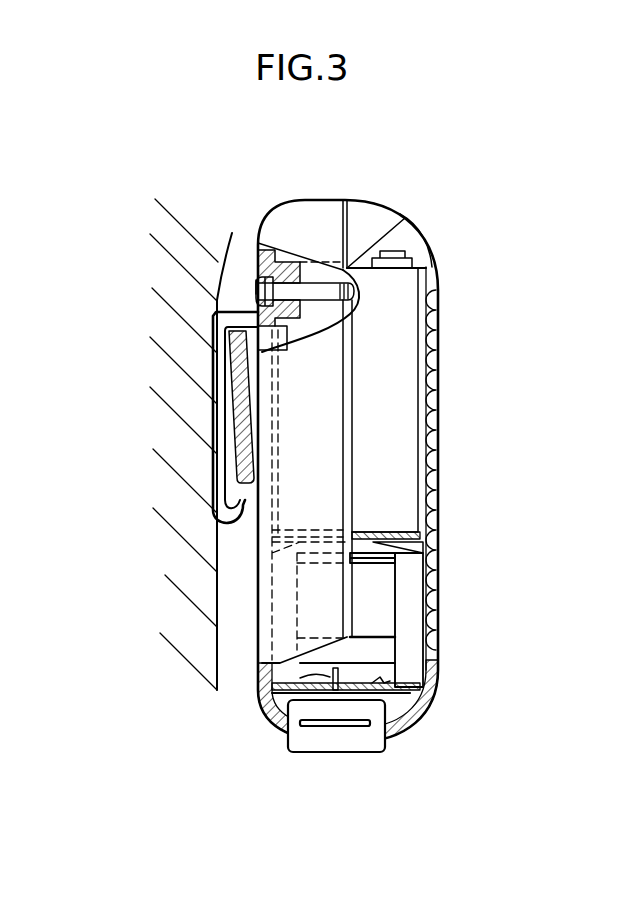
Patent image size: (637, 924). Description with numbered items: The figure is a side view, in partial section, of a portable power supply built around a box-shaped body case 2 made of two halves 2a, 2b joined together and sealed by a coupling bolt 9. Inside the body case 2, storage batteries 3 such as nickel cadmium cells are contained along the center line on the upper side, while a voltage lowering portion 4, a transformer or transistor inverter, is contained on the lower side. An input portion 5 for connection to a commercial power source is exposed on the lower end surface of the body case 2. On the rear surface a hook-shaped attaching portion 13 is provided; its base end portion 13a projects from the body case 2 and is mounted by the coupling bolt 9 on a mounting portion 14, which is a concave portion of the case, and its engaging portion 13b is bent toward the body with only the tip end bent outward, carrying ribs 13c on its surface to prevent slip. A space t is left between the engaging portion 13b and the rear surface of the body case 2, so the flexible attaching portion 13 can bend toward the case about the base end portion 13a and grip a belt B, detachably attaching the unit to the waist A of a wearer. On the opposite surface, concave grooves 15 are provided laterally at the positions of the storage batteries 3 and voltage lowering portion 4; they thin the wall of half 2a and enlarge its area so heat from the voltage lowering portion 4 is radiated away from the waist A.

The body case 2 is at (368, 196).
The half 2a is at (405, 209).
The half 2b is at (284, 200).
The storage batteries 3 is at (393, 382).
The voltage lowering portion 4 is at (382, 621).
The input portion 5 is at (363, 753).
The coupling bolt 9 is at (308, 292).
The attaching portion 13 is at (60, 262).
The base end portion 13a is at (213, 310).
The engaging portion 13b is at (212, 398).
The ribs 13c is at (212, 403).
The mounting portion 14 is at (256, 286).
The concave grooves 15 is at (437, 633).
The waist A is at (219, 650).
The belt B is at (250, 400).
The space t is at (250, 505).